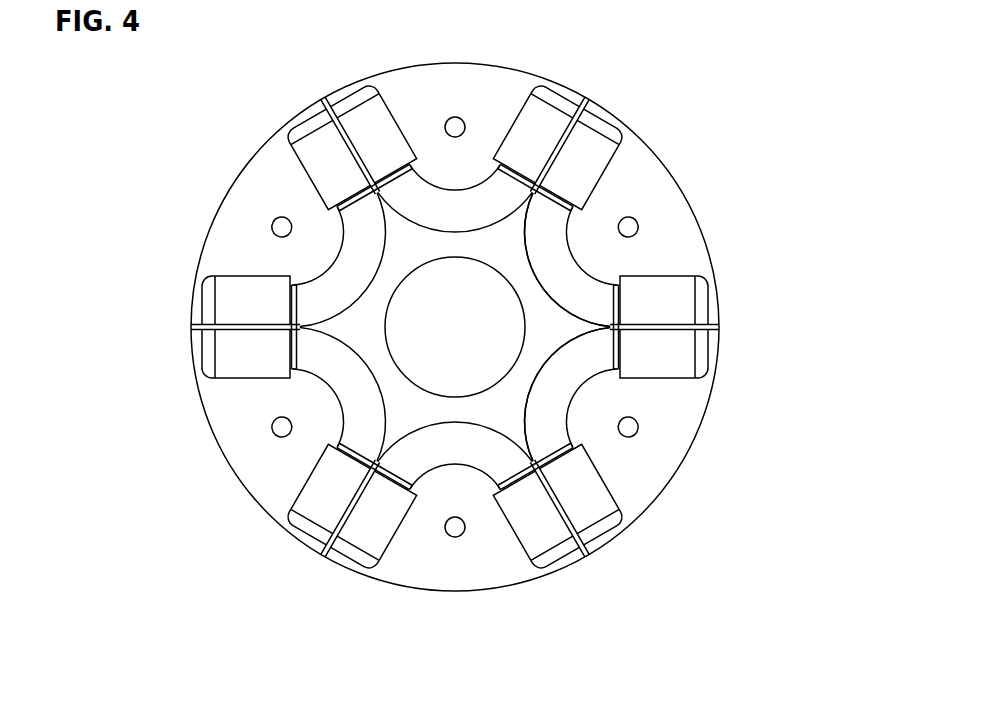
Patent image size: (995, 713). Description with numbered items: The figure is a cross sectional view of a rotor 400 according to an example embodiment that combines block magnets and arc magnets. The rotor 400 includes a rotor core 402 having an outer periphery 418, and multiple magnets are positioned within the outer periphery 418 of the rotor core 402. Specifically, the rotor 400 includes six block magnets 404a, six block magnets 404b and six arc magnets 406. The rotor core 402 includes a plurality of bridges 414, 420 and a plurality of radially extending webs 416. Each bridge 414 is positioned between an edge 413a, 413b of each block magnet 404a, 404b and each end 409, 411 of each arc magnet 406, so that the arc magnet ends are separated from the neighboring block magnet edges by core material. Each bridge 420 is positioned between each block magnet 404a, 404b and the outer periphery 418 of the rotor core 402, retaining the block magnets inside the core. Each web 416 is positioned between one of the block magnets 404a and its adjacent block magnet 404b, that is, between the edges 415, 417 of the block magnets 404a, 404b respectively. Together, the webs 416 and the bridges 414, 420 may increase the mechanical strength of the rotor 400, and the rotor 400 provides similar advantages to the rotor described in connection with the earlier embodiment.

The rotor 400 is at (656, 78).
The rotor core 402 is at (265, 178).
The block magnet 404a is at (673, 287).
The block magnet 404b is at (681, 370).
The arc magnet 406 is at (320, 290).
The end of arc magnet 409 is at (590, 270).
The end of arc magnet 411 is at (568, 223).
The edge of block magnet 413a is at (623, 308).
The edge of block magnet 413b is at (627, 363).
The bridge 414 is at (294, 372).
The edge of block magnet 415 is at (578, 522).
The web 416 is at (712, 327).
The edge of block magnet 417 is at (557, 515).
The outer periphery 418 is at (235, 467).
The bridge 420 is at (349, 95).